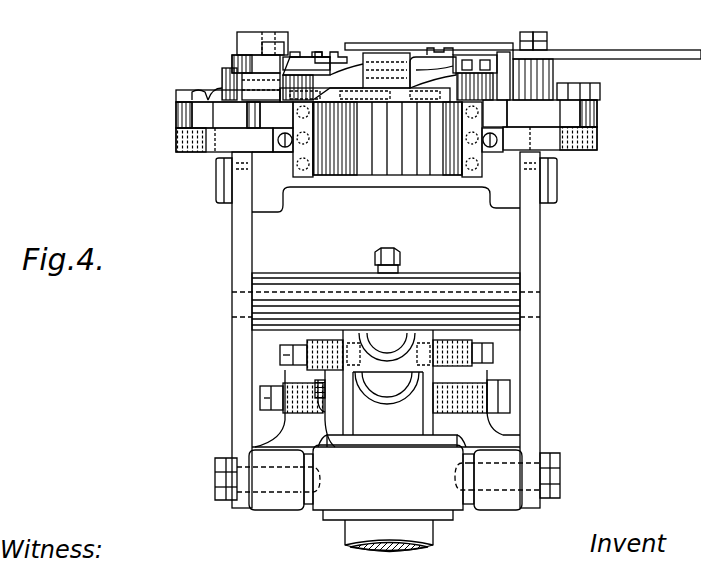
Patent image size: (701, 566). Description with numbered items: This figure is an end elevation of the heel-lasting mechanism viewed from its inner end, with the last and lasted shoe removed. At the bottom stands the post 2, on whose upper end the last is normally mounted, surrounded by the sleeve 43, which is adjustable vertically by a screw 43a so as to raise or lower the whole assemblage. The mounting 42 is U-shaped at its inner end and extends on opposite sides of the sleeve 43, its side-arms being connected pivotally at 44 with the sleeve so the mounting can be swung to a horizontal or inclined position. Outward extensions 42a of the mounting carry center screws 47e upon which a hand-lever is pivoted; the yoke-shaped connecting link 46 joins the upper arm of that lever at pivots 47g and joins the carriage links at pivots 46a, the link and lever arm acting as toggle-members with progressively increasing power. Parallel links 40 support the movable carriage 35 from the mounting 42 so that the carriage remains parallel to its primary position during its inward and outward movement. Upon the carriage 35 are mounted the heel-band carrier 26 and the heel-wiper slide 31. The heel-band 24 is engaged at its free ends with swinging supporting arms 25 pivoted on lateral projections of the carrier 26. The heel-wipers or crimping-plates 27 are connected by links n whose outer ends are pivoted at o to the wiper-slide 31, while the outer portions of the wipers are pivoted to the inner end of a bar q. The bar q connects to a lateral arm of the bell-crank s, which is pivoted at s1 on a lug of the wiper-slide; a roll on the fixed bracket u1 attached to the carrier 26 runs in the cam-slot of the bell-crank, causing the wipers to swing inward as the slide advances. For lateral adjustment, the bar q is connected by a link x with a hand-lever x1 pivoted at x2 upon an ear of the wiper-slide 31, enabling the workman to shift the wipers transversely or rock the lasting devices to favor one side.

The post 2 is at (433, 537).
The heel-band 24 is at (405, 177).
The swinging supporting arms 25 is at (225, 138).
The heel-band carrier 26 is at (600, 103).
The heel-wipers 27 is at (333, 98).
The heel-wiper slide 31 is at (415, 68).
The carriage 35 is at (422, 189).
The parallel links 40 is at (252, 248).
The mounting 42 is at (497, 547).
The outward extensions of the mounting 42a is at (500, 435).
The sleeve 43 is at (318, 515).
The screw 43a is at (645, 14).
The pivotal connections 44 is at (250, 483).
The connecting link 46 is at (433, 272).
The pivots connecting link to links 46a is at (541, 300).
The center screws 47e is at (272, 388).
The pivots connecting link to hand-lever 47g is at (282, 348).
The links n is at (300, 58).
The pivots o is at (317, 50).
The bar q is at (360, 58).
The bell-crank s is at (232, 62).
The pivot of bell-crank s1 is at (270, 50).
The fixed bracket u1 is at (235, 43).
The link x is at (503, 43).
The hand-lever x1 is at (637, 59).
The pivot of hand-lever x2 is at (548, 44).